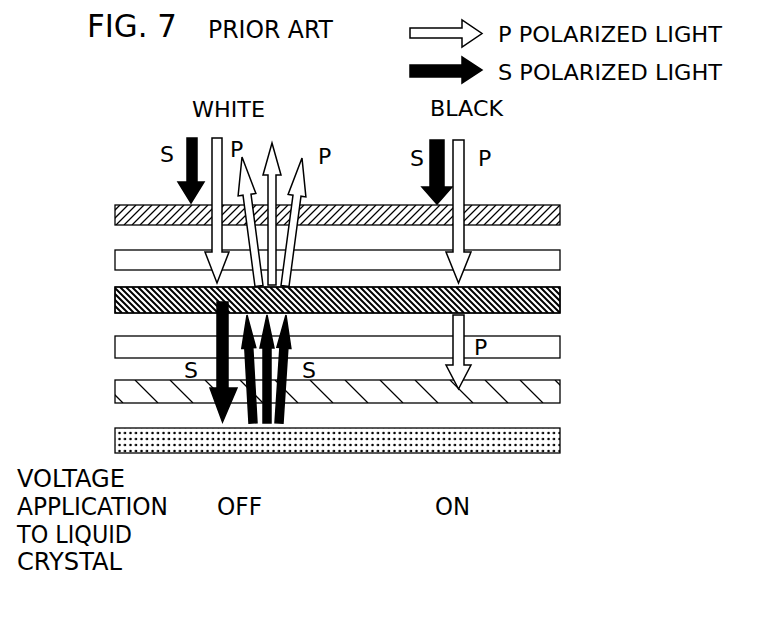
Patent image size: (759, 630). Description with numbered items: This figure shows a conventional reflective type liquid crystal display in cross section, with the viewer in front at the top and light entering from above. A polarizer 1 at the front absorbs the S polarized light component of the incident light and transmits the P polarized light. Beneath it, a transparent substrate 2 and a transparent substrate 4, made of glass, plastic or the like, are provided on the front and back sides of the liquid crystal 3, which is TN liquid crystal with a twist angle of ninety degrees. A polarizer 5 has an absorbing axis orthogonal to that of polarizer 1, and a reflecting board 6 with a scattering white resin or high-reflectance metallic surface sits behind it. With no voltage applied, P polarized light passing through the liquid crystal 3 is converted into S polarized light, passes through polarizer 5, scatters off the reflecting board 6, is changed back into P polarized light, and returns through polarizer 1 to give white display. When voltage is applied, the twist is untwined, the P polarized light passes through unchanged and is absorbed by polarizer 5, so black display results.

The polarizer 1 is at (558, 215).
The transparent substrate 2 is at (558, 260).
The liquid crystal 3 is at (558, 300).
The transparent substrate 4 is at (558, 347).
The polarizer 5 is at (558, 391).
The reflecting board 6 is at (558, 440).